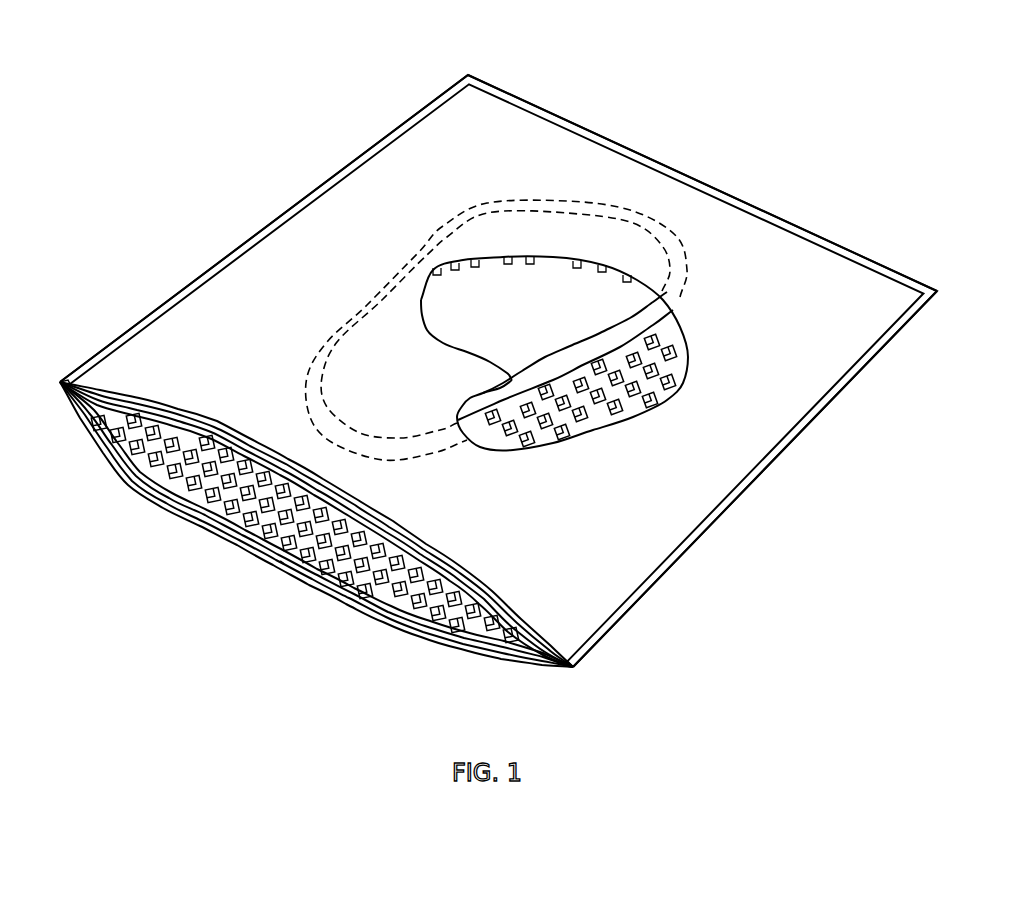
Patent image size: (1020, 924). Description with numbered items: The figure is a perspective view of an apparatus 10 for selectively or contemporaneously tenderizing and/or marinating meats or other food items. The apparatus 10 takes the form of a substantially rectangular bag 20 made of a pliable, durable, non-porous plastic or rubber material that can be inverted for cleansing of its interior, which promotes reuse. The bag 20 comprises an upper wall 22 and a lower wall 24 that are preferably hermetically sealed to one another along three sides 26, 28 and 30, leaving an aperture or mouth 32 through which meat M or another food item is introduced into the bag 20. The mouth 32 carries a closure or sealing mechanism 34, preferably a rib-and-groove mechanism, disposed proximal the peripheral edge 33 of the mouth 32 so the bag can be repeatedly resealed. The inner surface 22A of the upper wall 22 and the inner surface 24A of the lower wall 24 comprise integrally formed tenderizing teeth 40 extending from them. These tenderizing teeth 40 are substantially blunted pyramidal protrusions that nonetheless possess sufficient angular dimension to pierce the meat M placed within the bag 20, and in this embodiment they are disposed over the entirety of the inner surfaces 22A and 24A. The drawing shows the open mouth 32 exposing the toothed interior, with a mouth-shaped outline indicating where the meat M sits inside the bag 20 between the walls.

The apparatus 10 is at (232, 153).
The bag 20 is at (525, 153).
The upper wall 22 is at (153, 337).
The inner surface of upper wall 22A is at (500, 262).
The lower wall 24 is at (467, 645).
The inner surface of lower wall 24A is at (217, 515).
The side 26 is at (383, 142).
The side 28 is at (740, 200).
The side 30 is at (793, 447).
The mouth 32 is at (282, 561).
The peripheral edge 33 is at (92, 430).
The sealing mechanism 34 is at (150, 488).
The tenderizing teeth 40 is at (393, 604).
The meat M is at (643, 218).